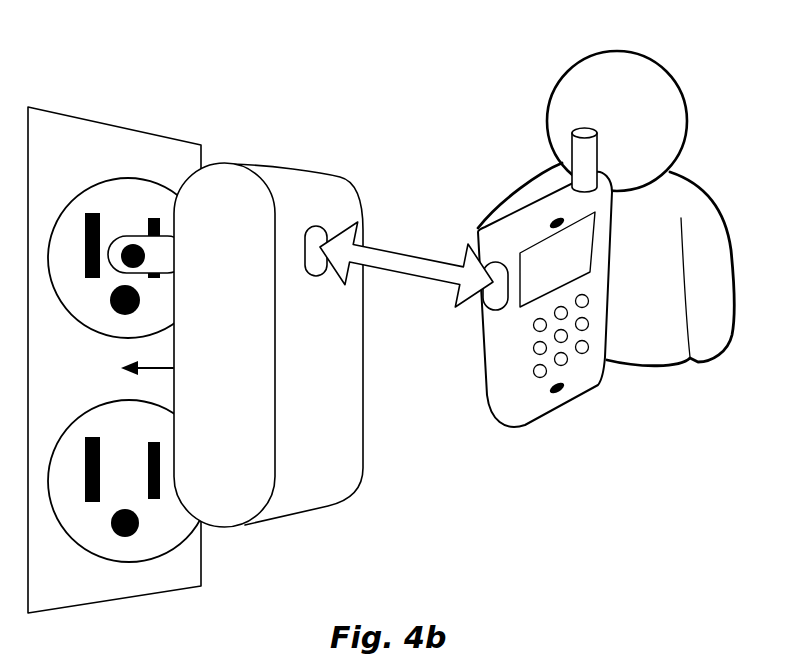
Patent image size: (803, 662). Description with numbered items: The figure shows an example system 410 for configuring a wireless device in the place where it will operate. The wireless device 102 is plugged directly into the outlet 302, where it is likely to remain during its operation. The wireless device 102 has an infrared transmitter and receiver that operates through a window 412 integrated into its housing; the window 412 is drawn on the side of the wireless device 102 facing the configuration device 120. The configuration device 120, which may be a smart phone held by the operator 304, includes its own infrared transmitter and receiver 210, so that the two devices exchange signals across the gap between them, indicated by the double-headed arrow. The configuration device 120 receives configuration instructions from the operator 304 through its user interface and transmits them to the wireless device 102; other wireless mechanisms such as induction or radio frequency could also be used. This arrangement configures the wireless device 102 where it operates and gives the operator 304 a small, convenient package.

The system 410 is at (131, 17).
The outlet 302 is at (130, 149).
The wireless device 102 is at (298, 190).
The window 412 is at (318, 234).
The operator 304 is at (660, 87).
The configuration device 120 is at (593, 382).
The infrared transmitter and receiver 210 is at (495, 300).